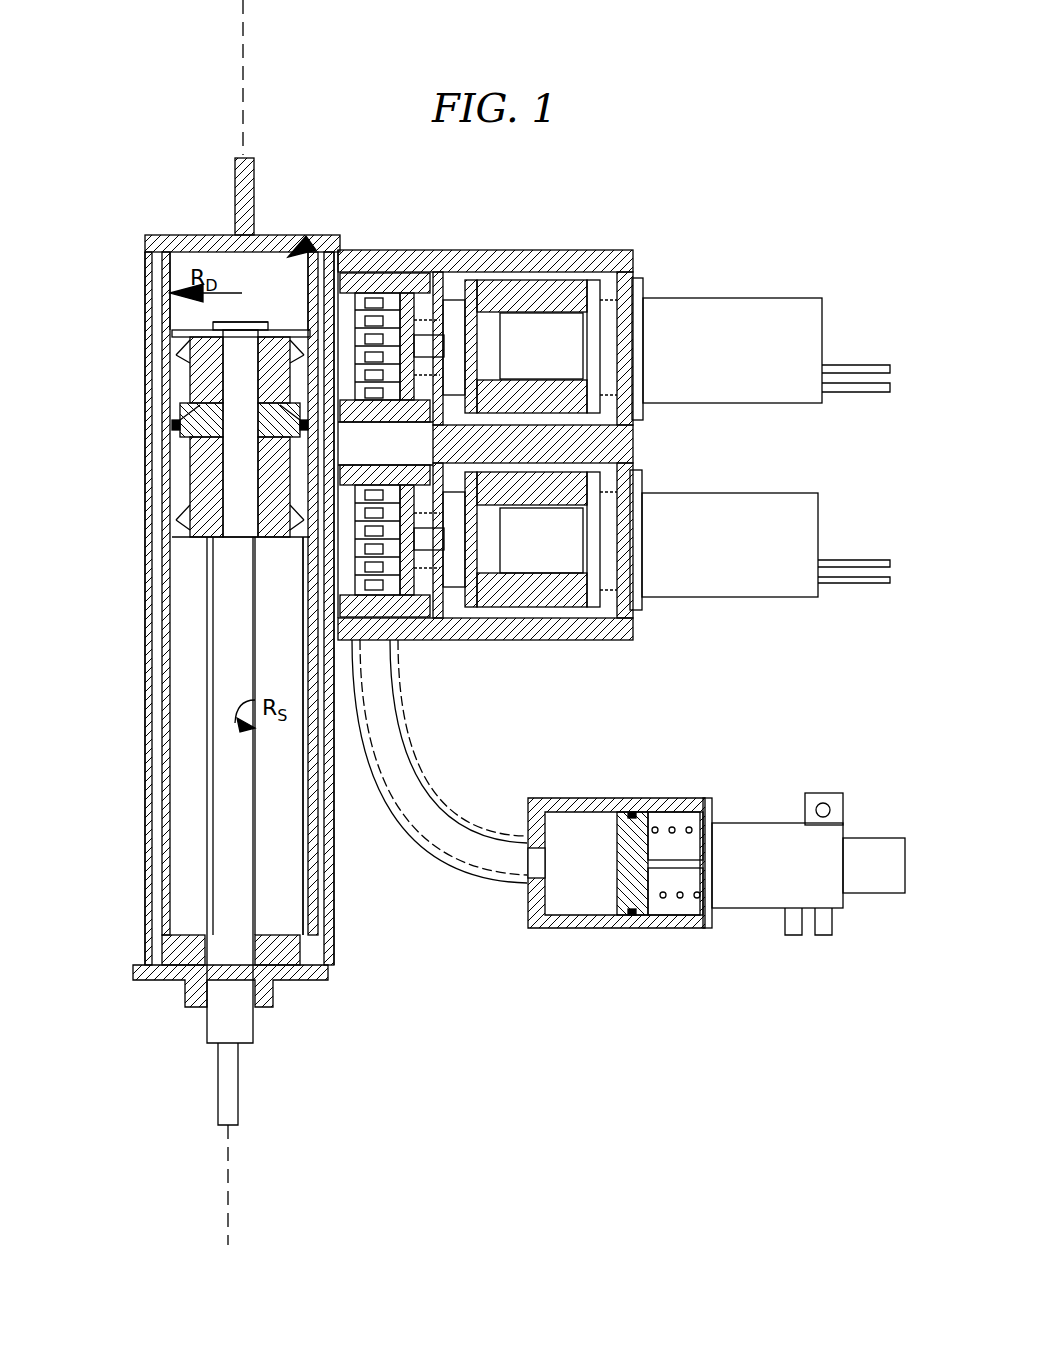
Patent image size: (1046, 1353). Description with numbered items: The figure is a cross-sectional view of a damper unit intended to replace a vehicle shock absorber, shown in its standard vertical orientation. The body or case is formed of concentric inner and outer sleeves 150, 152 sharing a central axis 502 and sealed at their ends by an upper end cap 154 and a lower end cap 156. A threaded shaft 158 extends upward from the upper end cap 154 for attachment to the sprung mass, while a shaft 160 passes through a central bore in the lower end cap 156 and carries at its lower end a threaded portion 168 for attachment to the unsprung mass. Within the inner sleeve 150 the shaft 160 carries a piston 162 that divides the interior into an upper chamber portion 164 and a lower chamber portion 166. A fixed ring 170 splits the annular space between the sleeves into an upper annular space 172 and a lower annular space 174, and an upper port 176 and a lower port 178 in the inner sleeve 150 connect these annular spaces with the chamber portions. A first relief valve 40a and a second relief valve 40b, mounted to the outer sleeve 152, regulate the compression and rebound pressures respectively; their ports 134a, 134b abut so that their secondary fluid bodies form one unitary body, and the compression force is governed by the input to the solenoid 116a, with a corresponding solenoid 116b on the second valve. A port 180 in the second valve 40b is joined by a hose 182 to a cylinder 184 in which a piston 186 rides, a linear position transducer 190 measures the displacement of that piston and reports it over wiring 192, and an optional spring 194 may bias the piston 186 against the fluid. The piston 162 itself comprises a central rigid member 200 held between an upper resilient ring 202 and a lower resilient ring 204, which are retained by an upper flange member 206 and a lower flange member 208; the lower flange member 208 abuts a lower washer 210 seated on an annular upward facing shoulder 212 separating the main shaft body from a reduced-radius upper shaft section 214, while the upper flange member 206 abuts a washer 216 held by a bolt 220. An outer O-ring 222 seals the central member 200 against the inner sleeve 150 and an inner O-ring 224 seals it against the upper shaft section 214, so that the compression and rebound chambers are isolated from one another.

The central axis 502 is at (243, 88).
The threaded shaft 158 is at (250, 170).
The upper end cap 154 is at (262, 235).
The upper chamber portion 164 is at (306, 240).
The upper annular space 172 is at (360, 280).
The upper port 176 is at (312, 305).
The bolt 220 is at (213, 323).
The washer 216 is at (178, 340).
The upper flange member 206 is at (180, 350).
The upper resilient ring 202 is at (195, 365).
The central rigid member 200 is at (180, 400).
The outer O-ring 222 is at (160, 430).
The piston 162 is at (166, 425).
The inner O-ring 224 is at (178, 440).
The fixed ring 170 is at (178, 443).
The lower resilient ring 204 is at (195, 495).
The lower flange member 208 is at (190, 515).
The lower washer 210 is at (185, 525).
The upper shaft section 214 is at (205, 540).
The annular upward facing shoulder 212 is at (230, 545).
The lower port 178 is at (305, 530).
The lower annular space 174 is at (318, 795).
The lower chamber portion 166 is at (313, 842).
The inner sleeve 150 is at (315, 872).
The outer sleeve 152 is at (330, 910).
The lower end cap 156 is at (310, 975).
The shaft 160 is at (232, 1030).
The threaded portion 168 is at (232, 1108).
The first relief valve 40a is at (652, 252).
The second relief valve 40b is at (635, 622).
The solenoid 116a is at (700, 308).
The solenoid 116b is at (713, 568).
The port 134a is at (480, 382).
The port 134b is at (480, 575).
The port 180 is at (378, 645).
The hose 182 is at (445, 805).
The cylinder 184 is at (568, 830).
The piston 186 is at (648, 838).
The spring 194 is at (690, 830).
The linear position transducer 190 is at (738, 905).
The wiring 192 is at (825, 947).